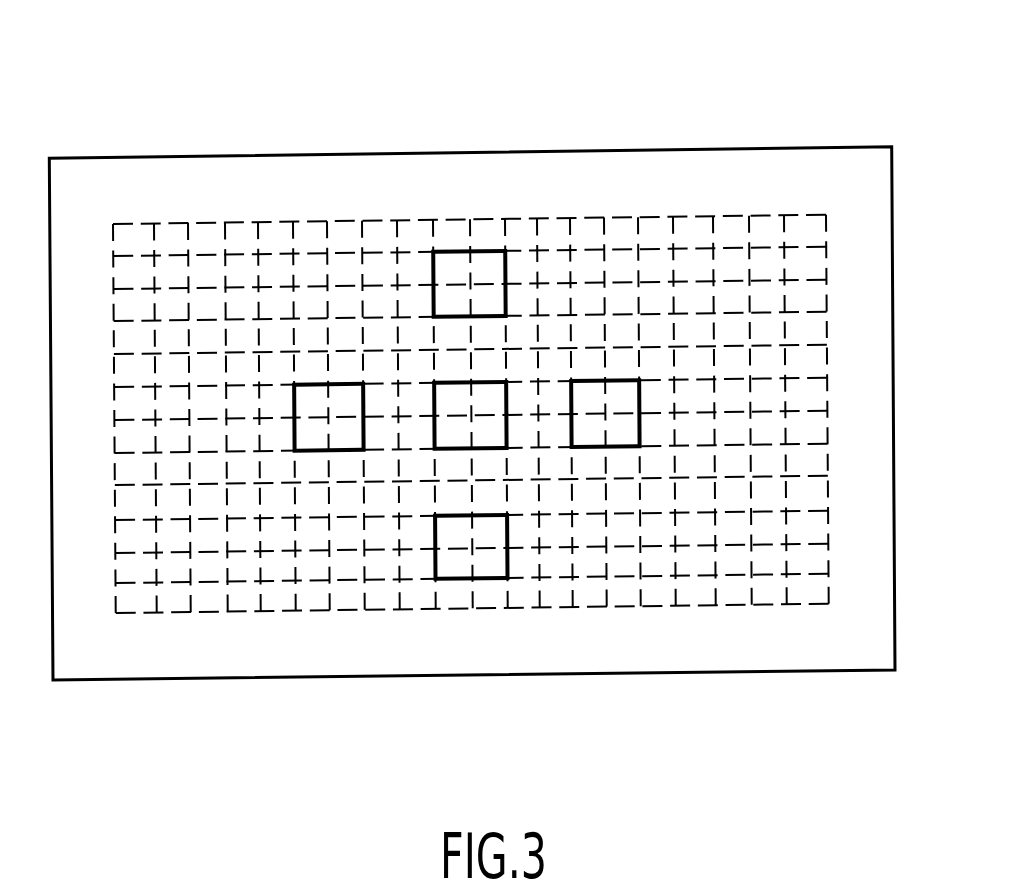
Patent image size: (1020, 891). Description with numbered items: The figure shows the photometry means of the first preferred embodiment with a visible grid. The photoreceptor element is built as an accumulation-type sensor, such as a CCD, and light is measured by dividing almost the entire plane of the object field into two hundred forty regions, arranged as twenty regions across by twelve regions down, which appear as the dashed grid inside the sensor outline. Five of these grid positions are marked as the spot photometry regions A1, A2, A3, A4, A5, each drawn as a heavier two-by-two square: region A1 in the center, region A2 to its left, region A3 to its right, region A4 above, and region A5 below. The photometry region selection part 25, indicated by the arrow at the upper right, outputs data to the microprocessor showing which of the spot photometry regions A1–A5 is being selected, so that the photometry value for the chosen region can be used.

The photometry region selection part 25 is at (727, 122).
The spot photometry region A1 is at (432, 430).
The spot photometry region A2 is at (330, 386).
The spot photometry region A3 is at (610, 383).
The spot photometry region A4 is at (476, 252).
The spot photometry region A5 is at (488, 583).